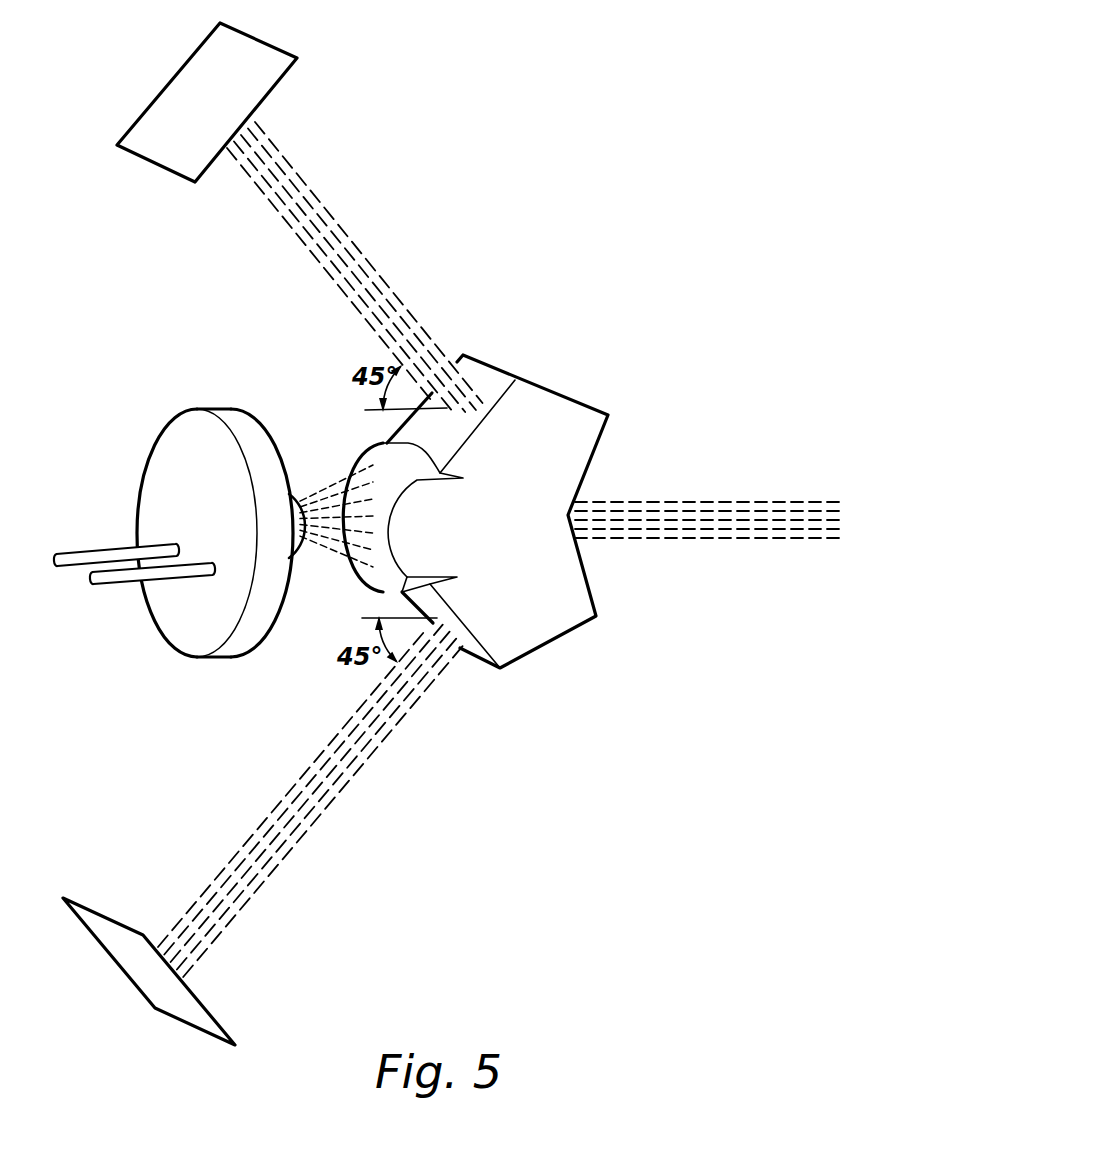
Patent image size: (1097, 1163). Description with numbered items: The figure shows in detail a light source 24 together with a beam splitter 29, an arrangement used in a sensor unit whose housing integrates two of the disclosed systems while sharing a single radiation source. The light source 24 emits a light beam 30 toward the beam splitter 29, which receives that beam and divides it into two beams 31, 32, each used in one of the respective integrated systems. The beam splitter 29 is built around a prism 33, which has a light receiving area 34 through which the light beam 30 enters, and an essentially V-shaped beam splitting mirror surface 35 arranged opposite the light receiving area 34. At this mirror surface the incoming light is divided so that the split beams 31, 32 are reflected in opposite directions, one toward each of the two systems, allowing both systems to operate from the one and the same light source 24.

The light source 24 is at (170, 478).
The beam splitter 29 is at (547, 437).
The light beam 30 is at (327, 493).
The first split beam 31 is at (370, 267).
The second split beam 32 is at (342, 786).
The prism 33 is at (510, 553).
The light receiving area 34 is at (375, 522).
The beam splitting mirror surface 35 is at (583, 572).